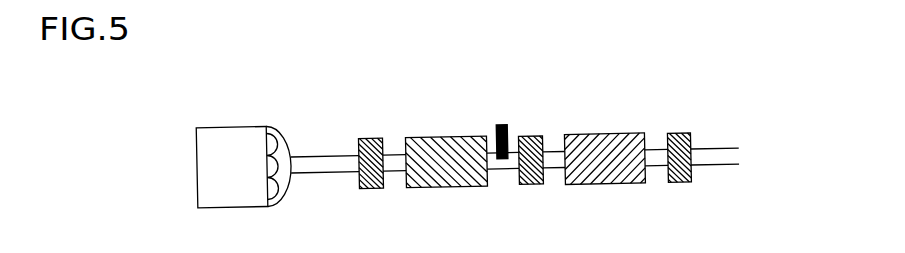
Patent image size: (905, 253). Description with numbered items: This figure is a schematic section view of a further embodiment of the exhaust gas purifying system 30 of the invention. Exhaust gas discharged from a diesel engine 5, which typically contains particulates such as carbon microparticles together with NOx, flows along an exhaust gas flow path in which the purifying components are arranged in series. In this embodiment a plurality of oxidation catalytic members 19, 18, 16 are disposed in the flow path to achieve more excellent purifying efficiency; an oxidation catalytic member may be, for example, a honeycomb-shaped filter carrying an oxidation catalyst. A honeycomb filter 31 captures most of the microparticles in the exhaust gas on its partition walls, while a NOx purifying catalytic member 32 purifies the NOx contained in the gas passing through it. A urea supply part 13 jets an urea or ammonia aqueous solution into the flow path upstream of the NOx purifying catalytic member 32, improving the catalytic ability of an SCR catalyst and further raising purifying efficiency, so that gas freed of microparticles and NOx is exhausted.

The diesel engine 5 is at (233, 135).
The oxidation catalytic member 19 is at (363, 140).
The honeycomb filter 31 is at (430, 145).
The urea supply part 13 is at (500, 128).
The oxidation catalytic member 18 is at (530, 137).
The NOx purifying catalytic member 32 is at (598, 140).
The oxidation catalytic member 16 is at (680, 138).
The exhaust gas purifying system 30 is at (734, 83).